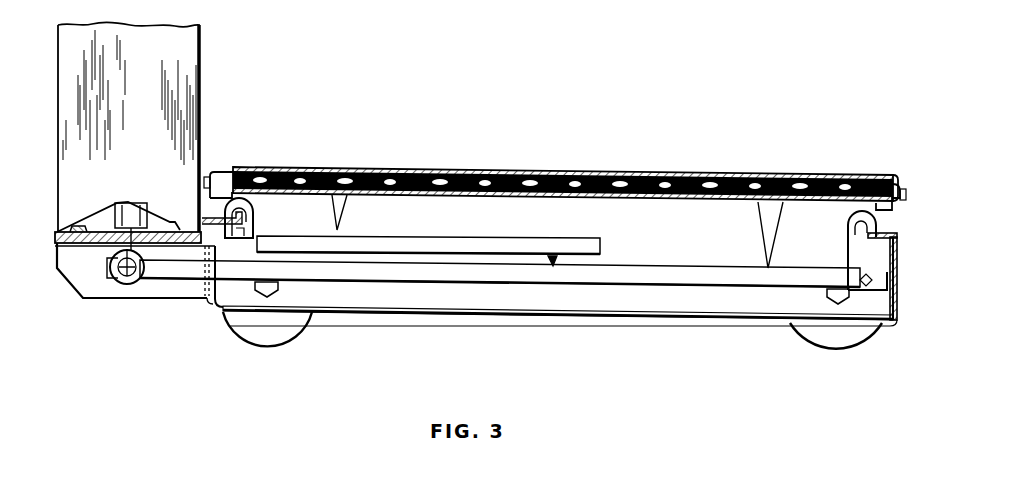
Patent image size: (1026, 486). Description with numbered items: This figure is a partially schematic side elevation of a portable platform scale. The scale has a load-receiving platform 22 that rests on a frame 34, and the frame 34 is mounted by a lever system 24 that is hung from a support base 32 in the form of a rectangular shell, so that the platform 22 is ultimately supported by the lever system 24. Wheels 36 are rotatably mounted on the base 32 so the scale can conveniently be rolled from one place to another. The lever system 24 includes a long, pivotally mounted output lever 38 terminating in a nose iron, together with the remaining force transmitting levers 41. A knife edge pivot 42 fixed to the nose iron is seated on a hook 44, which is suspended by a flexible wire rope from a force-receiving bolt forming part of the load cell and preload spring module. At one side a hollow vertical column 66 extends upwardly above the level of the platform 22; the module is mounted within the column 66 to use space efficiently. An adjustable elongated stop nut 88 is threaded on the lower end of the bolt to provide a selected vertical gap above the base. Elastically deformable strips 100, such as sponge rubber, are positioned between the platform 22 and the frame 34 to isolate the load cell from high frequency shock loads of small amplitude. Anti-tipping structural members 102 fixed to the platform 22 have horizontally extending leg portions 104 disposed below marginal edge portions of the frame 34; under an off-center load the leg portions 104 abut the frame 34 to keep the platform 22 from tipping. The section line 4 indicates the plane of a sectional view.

The section line 4- 4 is at (82, 8).
The load-receiving platform 22 is at (565, 169).
The lever system 24 is at (702, 262).
The support base 32 is at (897, 272).
The frame 34 is at (733, 177).
The wheels 36 is at (242, 323).
The output lever 38 is at (370, 283).
The force transmitting levers 41 is at (602, 240).
The knife edge pivot 42 is at (143, 280).
The hook 44 is at (118, 283).
The column 66 is at (201, 108).
The stop nut 88 is at (120, 203).
The elastically deformable strips 100 is at (620, 172).
The anti-tipping structural members 102 is at (214, 158).
The leg portions 104 is at (207, 212).